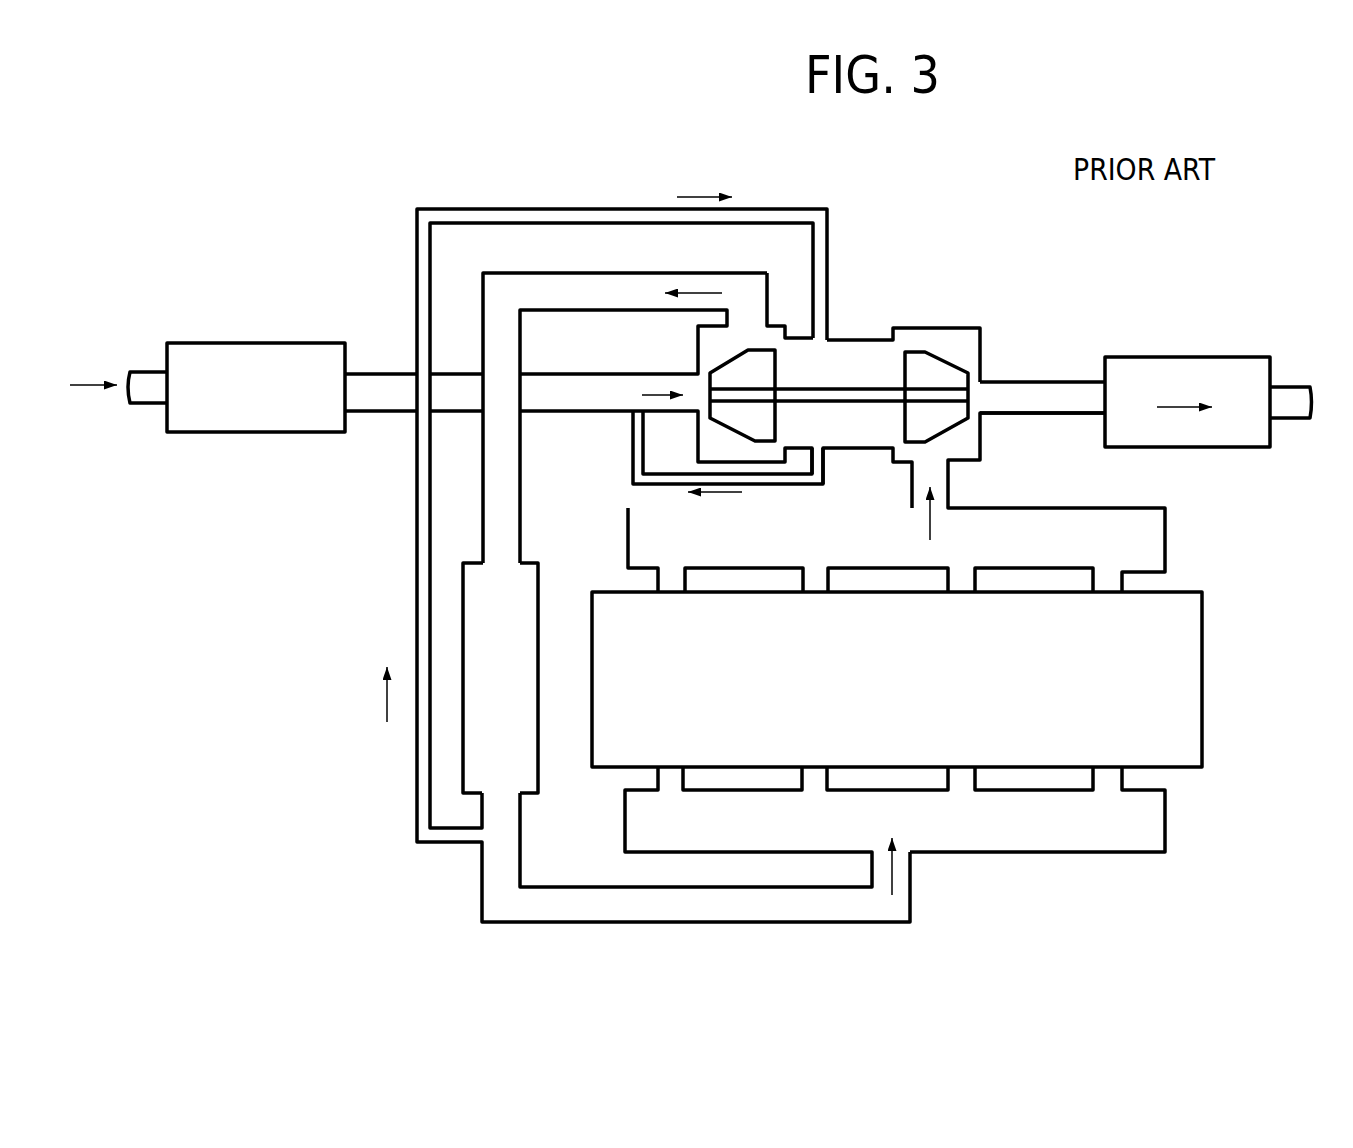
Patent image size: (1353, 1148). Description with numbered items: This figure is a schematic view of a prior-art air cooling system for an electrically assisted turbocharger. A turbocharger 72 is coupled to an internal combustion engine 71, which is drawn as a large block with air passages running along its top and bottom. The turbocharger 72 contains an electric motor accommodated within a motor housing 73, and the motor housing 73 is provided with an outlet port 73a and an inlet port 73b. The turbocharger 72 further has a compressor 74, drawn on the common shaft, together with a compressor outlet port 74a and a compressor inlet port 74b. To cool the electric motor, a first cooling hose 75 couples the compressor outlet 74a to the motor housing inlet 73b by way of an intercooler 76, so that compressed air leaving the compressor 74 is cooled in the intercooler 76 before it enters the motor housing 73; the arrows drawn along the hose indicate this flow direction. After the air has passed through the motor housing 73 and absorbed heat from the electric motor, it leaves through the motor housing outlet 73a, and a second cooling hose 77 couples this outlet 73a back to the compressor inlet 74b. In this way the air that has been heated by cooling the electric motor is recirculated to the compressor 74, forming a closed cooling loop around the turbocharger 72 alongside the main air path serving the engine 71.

The internal combustion engine 71 is at (1205, 673).
The turbocharger 72 is at (947, 320).
The motor housing 73 is at (863, 353).
The motor housing outlet port 73a is at (817, 460).
The motor housing inlet port 73b is at (822, 300).
The compressor 74 is at (722, 380).
The compressor outlet port 74a is at (653, 287).
The compressor inlet port 74b is at (630, 398).
The first cooling hose 75 is at (423, 307).
The intercooler 76 is at (477, 665).
The second cooling hose 77 is at (640, 477).